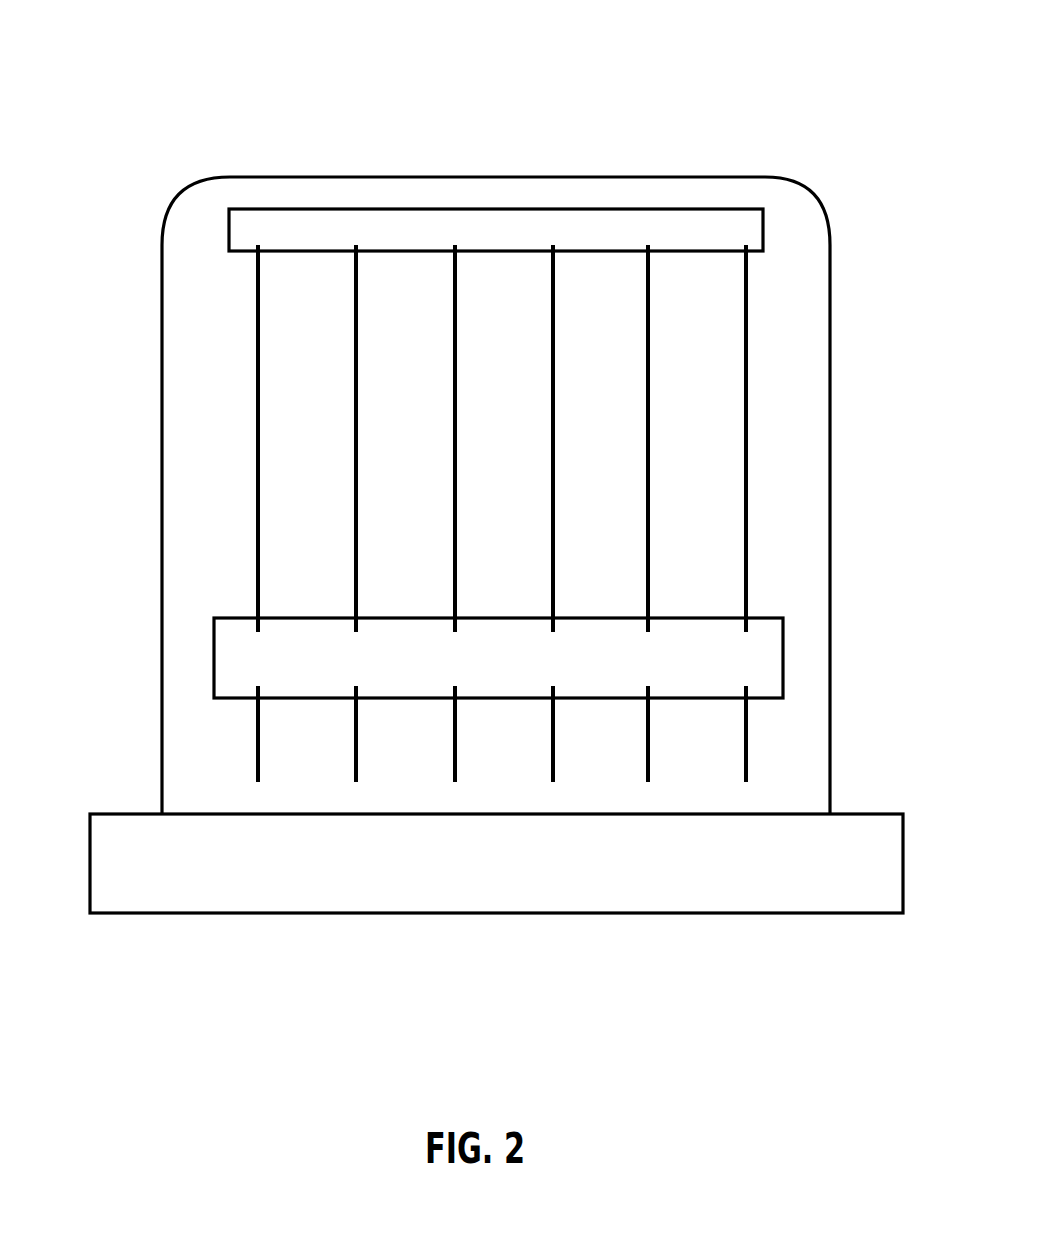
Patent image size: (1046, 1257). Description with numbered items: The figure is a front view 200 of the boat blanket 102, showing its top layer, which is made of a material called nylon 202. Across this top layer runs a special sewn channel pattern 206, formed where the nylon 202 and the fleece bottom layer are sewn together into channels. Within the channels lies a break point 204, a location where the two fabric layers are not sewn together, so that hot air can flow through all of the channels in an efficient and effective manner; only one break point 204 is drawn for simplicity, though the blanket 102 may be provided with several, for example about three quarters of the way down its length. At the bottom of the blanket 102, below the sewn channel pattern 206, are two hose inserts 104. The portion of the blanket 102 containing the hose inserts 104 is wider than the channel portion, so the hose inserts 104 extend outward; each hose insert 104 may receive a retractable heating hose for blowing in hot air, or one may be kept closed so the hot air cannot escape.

The front view 200 is at (192, 138).
The boat blanket 102 is at (828, 437).
The nylon 202 is at (798, 312).
The break point 204 is at (700, 209).
The sewn channel pattern 206 is at (252, 440).
The hose insert 104 is at (90, 862).